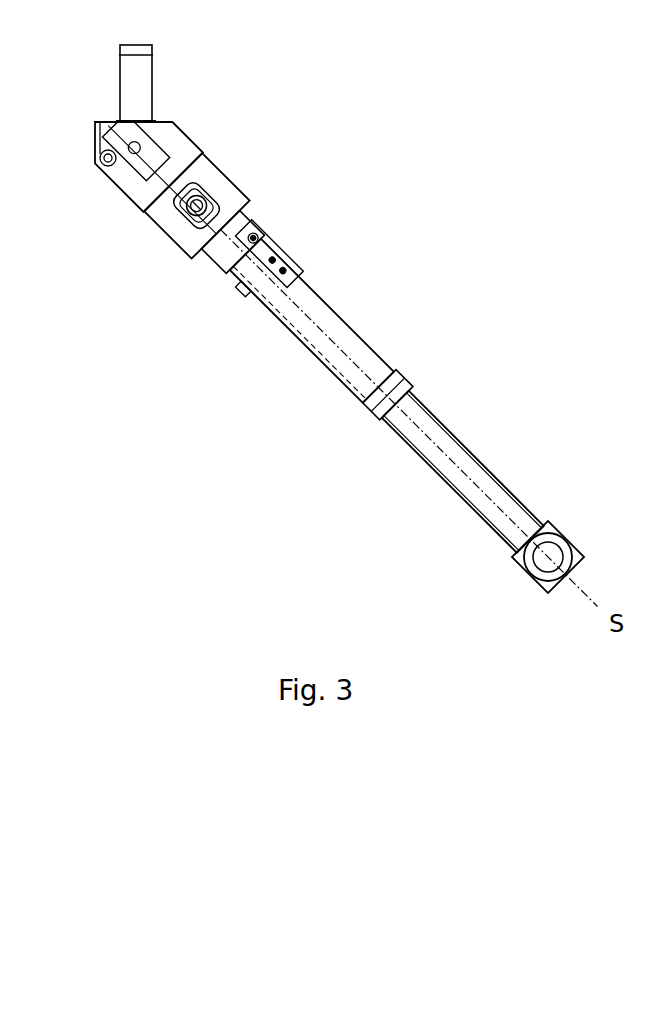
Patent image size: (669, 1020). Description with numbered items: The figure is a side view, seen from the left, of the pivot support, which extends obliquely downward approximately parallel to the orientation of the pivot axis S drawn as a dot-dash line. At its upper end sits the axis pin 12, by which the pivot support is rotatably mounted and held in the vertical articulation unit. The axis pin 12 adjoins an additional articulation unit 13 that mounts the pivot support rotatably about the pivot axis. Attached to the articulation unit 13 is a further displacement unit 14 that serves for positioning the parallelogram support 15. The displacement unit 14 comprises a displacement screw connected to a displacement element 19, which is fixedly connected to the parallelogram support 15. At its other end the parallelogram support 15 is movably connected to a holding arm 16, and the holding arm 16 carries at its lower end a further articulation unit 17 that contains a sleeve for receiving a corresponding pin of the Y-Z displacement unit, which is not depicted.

The axis pin 12 is at (135, 78).
The articulation unit 13 is at (187, 150).
The displacement unit 14 is at (258, 224).
The parallelogram support 15 is at (323, 323).
The holding arm 16 is at (437, 435).
The further articulation unit 17 is at (516, 556).
The displacement element 19 is at (285, 260).